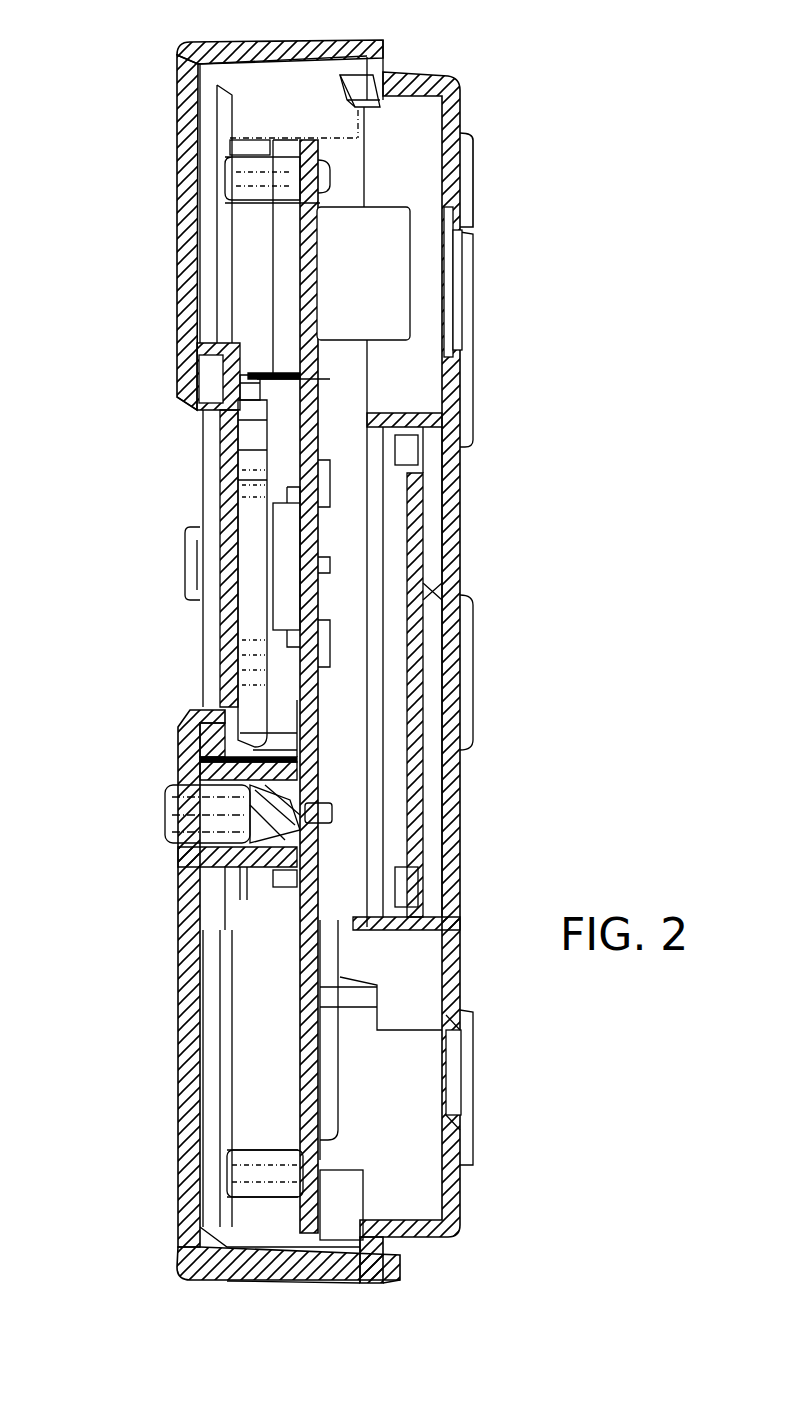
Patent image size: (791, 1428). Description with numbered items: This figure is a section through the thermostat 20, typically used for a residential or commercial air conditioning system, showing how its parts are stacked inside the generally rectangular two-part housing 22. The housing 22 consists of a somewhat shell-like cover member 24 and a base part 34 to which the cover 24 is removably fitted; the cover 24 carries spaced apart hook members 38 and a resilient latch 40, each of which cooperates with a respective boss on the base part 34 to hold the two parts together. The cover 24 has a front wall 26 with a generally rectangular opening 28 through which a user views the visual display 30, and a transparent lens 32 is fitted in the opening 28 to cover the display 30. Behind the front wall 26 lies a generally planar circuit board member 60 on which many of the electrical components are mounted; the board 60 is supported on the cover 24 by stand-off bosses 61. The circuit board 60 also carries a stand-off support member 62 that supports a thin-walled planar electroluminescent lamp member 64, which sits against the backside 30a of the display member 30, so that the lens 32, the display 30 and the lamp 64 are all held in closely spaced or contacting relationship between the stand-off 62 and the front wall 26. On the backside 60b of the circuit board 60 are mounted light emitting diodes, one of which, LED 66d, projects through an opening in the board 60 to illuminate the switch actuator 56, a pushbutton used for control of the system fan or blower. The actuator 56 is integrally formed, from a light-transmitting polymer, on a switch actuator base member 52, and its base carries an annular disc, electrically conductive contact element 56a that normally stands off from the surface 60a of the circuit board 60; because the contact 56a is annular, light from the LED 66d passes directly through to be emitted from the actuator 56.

The thermostat 20 is at (347, 1298).
The housing 22 is at (196, 1280).
The cover member 24 is at (183, 232).
The front wall 26 is at (178, 389).
The opening 28 is at (217, 417).
The visual display 30 is at (250, 666).
The backside 30a is at (260, 446).
The transparent lens 32 is at (228, 497).
The base part 34 is at (460, 832).
The hook members 38 is at (371, 80).
The resilient latch 40 is at (400, 1282).
The switch actuator base member 52 is at (245, 758).
The switch actuator 56 is at (162, 817).
The contact element 56a is at (322, 820).
The circuit board member 60 is at (312, 263).
The surface 60a is at (300, 1020).
The backside 60b is at (318, 456).
The stand-off bosses 61 is at (287, 157).
The stand-off support member 62 is at (275, 415).
The electroluminescent lamp member 64 is at (262, 587).
The light emitting diode 66d is at (333, 815).